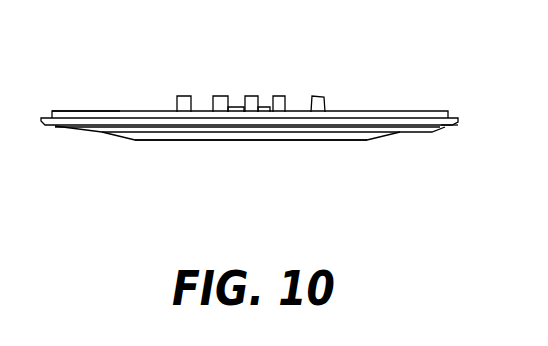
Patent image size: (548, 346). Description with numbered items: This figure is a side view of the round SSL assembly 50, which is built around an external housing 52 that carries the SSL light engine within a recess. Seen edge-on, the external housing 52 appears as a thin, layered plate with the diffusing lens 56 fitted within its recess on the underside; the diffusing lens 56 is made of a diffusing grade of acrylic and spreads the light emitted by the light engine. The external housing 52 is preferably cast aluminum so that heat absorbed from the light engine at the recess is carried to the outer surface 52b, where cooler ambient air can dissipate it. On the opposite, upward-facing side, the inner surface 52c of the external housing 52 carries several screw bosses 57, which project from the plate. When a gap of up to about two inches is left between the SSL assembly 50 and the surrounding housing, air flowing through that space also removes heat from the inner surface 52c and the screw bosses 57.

The SSL assembly 50 is at (208, 208).
The external housing 52 is at (424, 133).
The outer surface of the external housing 52b is at (440, 128).
The inner surface of the external housing 52c is at (117, 111).
The diffusing lens 56 is at (283, 141).
The screw bosses 57 is at (191, 104).